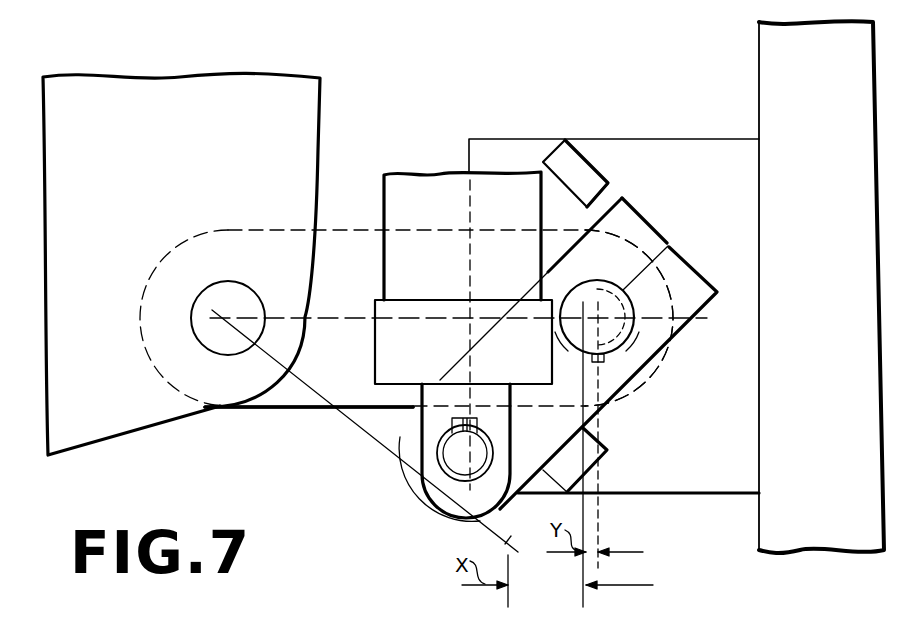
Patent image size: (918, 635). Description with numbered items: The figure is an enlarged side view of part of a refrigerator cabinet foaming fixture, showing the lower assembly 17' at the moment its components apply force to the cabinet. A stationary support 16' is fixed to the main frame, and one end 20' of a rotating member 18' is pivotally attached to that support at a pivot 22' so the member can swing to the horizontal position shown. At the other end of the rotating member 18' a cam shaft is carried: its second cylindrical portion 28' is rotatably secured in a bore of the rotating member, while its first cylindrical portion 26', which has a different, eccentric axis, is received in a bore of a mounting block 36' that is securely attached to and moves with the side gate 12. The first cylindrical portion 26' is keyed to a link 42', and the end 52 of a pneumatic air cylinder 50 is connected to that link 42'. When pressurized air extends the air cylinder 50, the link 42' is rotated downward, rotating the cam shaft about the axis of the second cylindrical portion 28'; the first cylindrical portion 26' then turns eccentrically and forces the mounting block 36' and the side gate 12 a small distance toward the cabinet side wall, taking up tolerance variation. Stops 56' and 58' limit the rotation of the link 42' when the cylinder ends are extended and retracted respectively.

The stationary support 16' is at (181, 241).
The rotating member 18' is at (423, 343).
The lower assembly 17' is at (309, 451).
The end of rotating member 20' is at (309, 447).
The pivot 22' is at (231, 299).
The mounting block 36' is at (614, 296).
The side gate 12 is at (862, 214).
The air cylinder 50 is at (410, 176).
The stop 58' is at (590, 155).
The link 42' is at (608, 353).
The first cylindrical portion 26' is at (636, 443).
The second cylindrical portion 28' is at (579, 318).
The stop 56' is at (613, 460).
The end of air cylinder 52 is at (420, 463).